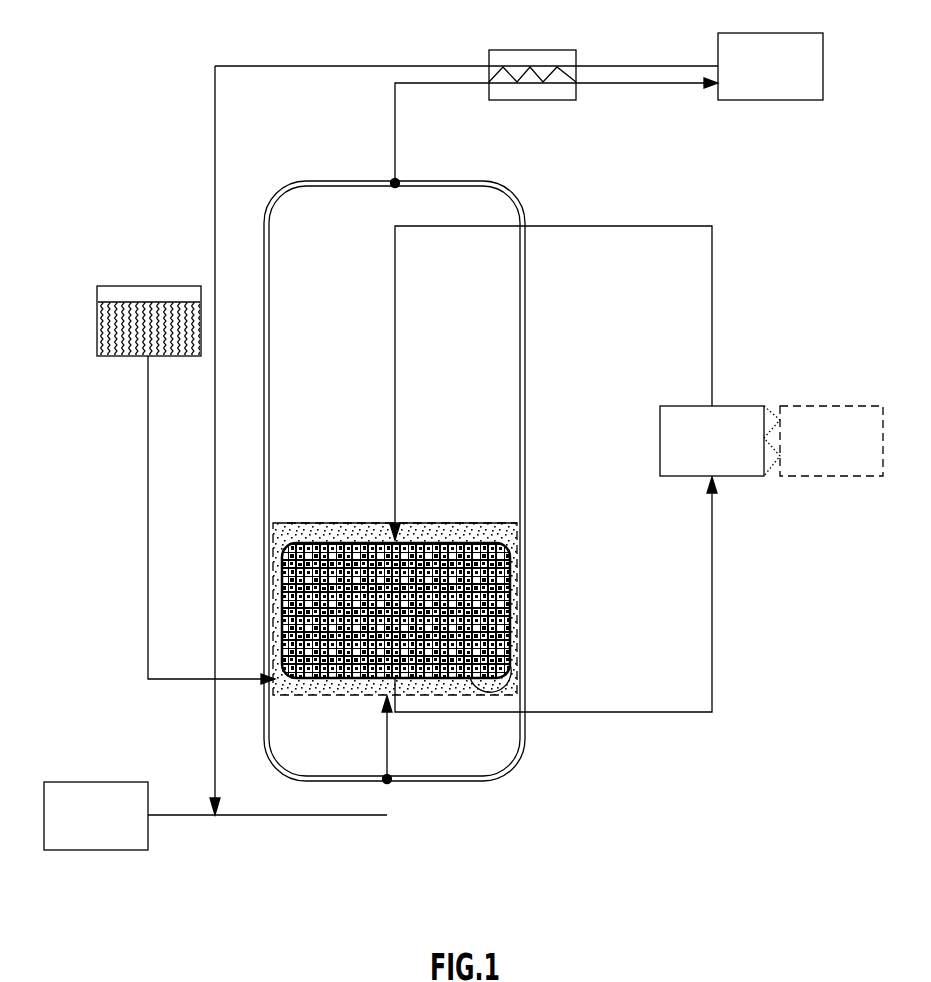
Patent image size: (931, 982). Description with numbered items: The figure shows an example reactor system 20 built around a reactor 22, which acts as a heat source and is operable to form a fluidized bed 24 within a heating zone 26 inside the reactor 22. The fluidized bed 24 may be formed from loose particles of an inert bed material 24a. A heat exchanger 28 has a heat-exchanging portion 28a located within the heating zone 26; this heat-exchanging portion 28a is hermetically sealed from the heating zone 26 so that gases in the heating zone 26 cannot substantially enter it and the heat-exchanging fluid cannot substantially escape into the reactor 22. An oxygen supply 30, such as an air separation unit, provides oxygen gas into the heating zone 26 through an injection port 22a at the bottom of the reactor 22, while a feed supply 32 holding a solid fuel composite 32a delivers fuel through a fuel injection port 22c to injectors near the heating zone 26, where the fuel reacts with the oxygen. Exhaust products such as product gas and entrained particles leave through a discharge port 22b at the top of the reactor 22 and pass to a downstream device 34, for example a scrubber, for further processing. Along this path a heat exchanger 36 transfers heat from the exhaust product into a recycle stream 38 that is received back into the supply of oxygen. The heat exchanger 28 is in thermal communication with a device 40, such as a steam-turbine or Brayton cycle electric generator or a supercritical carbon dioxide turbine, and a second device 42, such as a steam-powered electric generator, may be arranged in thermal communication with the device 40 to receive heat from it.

The reactor system 20 is at (463, 453).
The reactor 22 is at (525, 378).
The injection port 22a is at (388, 781).
The discharge port 22b is at (396, 183).
The fuel injection port 22c is at (277, 682).
The fluidized bed 24 is at (516, 530).
The inert bed material 24a is at (403, 524).
The heating zone 26 is at (495, 523).
The heat exchanger 28 is at (465, 719).
The heat-exchanging portion 28a is at (500, 678).
The oxygen supply 30 is at (123, 850).
The feed supply 32 is at (97, 349).
The solid fuel composite 32a is at (116, 317).
The downstream device 34 is at (760, 100).
The heat exchanger 36 is at (540, 50).
The recycle stream 38 is at (605, 66).
The device 40 is at (737, 406).
The second device 42 is at (825, 476).